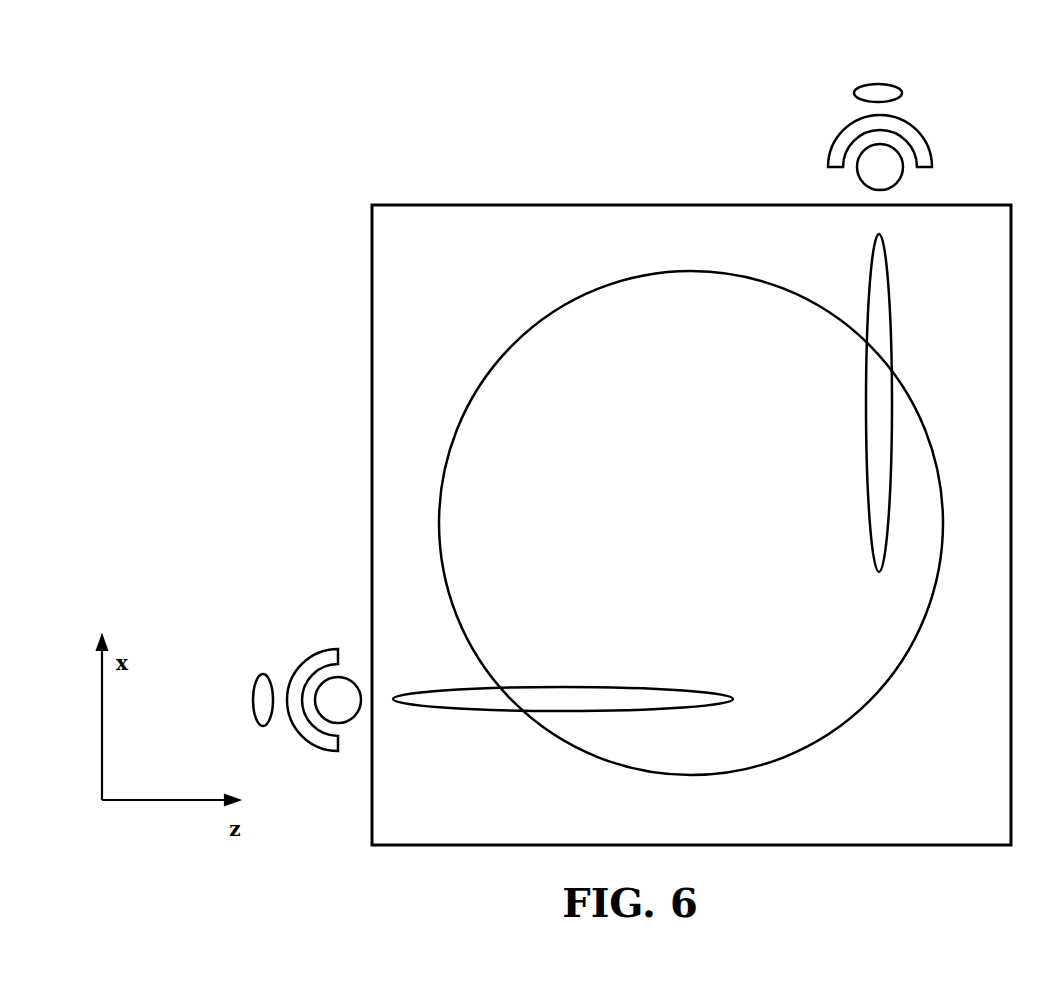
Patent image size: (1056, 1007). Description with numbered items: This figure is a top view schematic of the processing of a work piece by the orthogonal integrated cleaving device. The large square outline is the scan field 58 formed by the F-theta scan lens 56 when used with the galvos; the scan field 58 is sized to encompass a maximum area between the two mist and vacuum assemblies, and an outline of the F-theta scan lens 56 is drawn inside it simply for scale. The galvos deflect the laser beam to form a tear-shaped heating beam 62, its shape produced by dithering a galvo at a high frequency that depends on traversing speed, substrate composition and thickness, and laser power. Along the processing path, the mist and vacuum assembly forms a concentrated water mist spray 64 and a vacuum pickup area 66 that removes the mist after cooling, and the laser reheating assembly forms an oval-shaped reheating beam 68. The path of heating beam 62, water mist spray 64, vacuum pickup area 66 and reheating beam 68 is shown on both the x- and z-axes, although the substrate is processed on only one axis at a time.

The F-theta scan lens 56 is at (800, 293).
The scan field 58 is at (513, 218).
The heating beam 62 is at (891, 297).
The water mist spray 64 is at (899, 178).
The vacuum pickup area 66 is at (928, 145).
The reheating beam 68 is at (900, 90).